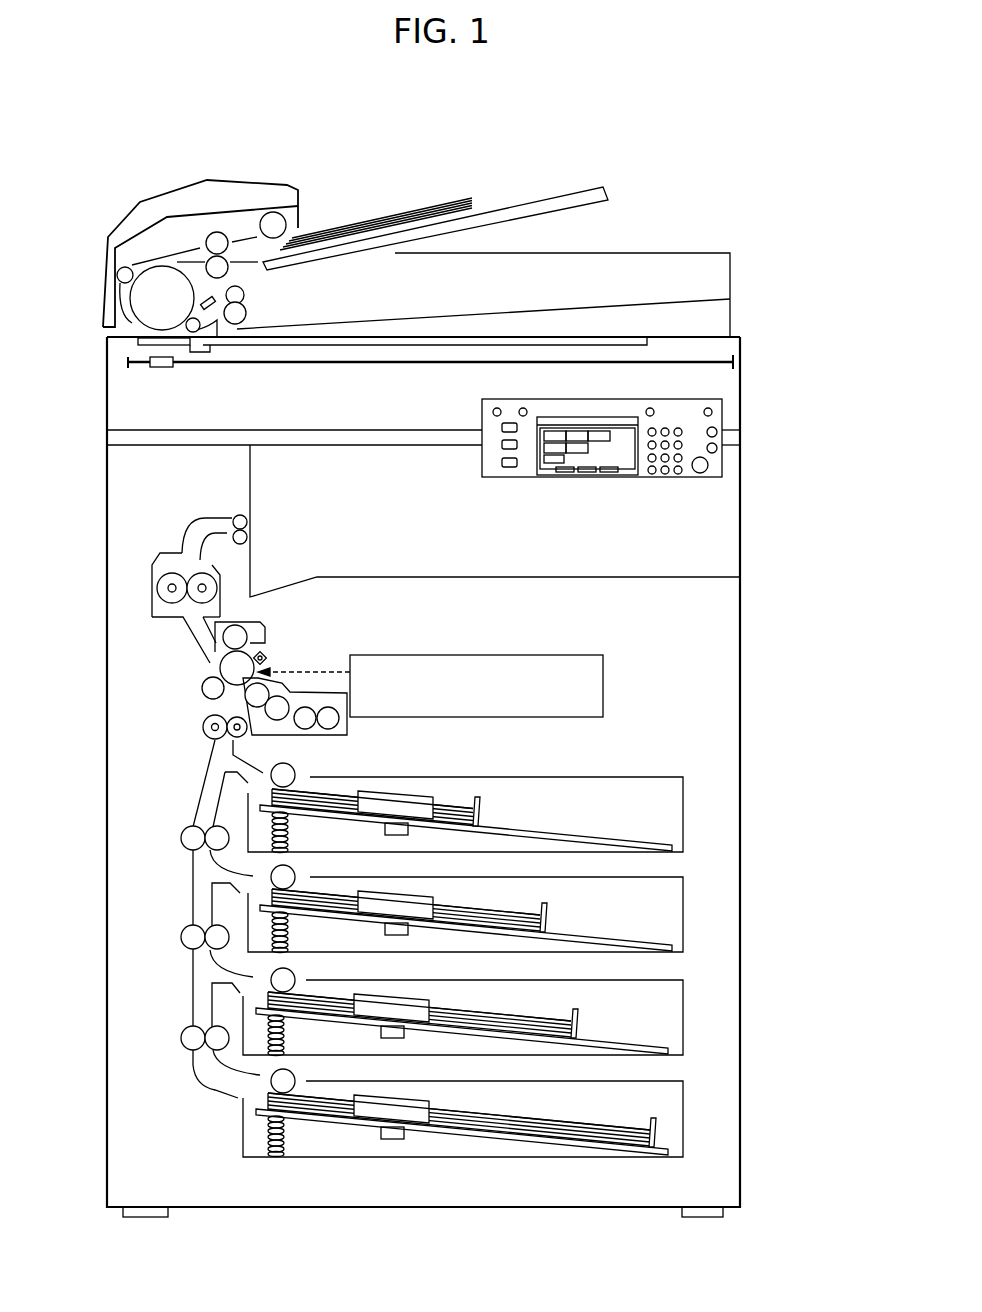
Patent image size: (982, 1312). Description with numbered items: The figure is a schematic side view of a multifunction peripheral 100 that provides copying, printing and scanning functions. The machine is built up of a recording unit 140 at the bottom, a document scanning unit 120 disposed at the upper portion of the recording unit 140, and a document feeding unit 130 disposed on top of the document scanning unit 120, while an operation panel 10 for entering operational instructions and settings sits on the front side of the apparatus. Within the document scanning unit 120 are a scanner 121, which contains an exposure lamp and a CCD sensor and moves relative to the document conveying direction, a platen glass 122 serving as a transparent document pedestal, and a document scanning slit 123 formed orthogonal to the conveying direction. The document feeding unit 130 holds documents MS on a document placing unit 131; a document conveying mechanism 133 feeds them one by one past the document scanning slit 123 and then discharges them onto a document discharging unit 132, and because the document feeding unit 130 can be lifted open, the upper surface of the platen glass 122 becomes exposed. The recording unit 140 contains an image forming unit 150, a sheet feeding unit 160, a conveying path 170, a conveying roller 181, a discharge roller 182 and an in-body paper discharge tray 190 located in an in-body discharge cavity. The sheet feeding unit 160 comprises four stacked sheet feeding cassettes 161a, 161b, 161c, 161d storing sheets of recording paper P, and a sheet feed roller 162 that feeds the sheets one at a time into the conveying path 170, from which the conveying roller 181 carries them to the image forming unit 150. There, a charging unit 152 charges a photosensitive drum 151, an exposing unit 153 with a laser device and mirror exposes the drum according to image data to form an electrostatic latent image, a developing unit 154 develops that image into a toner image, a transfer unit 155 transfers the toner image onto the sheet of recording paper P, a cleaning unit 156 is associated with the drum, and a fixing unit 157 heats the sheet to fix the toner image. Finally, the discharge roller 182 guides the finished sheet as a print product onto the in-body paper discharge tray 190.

The multifunction peripheral 100 is at (107, 163).
The operation panel 10 is at (725, 425).
The document scanning unit 120 is at (747, 375).
The scanner 121 is at (160, 368).
The platen glass 122 is at (573, 342).
The document scanning slit 123 is at (172, 342).
The document feeding unit 130 is at (320, 187).
The document placing unit 131 is at (580, 187).
The document discharging unit 132 is at (497, 313).
The document conveying mechanism 133 is at (230, 180).
The document MS is at (433, 208).
The recording unit 140 is at (747, 647).
The image forming unit 150 is at (347, 635).
The photosensitive drum 151 is at (227, 663).
The charging unit 152 is at (263, 655).
The exposing unit 153 is at (567, 695).
The developing unit 154 is at (347, 727).
The transfer unit 155 is at (207, 687).
The cleaning unit 156 is at (257, 625).
The fixing unit 157 is at (222, 582).
The sheet feeding unit 160 is at (715, 792).
The sheet feeding cassette 161a is at (685, 820).
The sheet feeding cassette 161b is at (685, 920).
The sheet feeding cassette 161c is at (685, 1022).
The sheet feeding cassette 161d is at (685, 1123).
The sheet feed roller 162 is at (295, 773).
The recording paper P is at (447, 803).
The conveying path 170 is at (197, 767).
The conveying roller 181 is at (202, 727).
The discharge roller 182 is at (244, 518).
The in-body paper discharge tray 190 is at (458, 577).